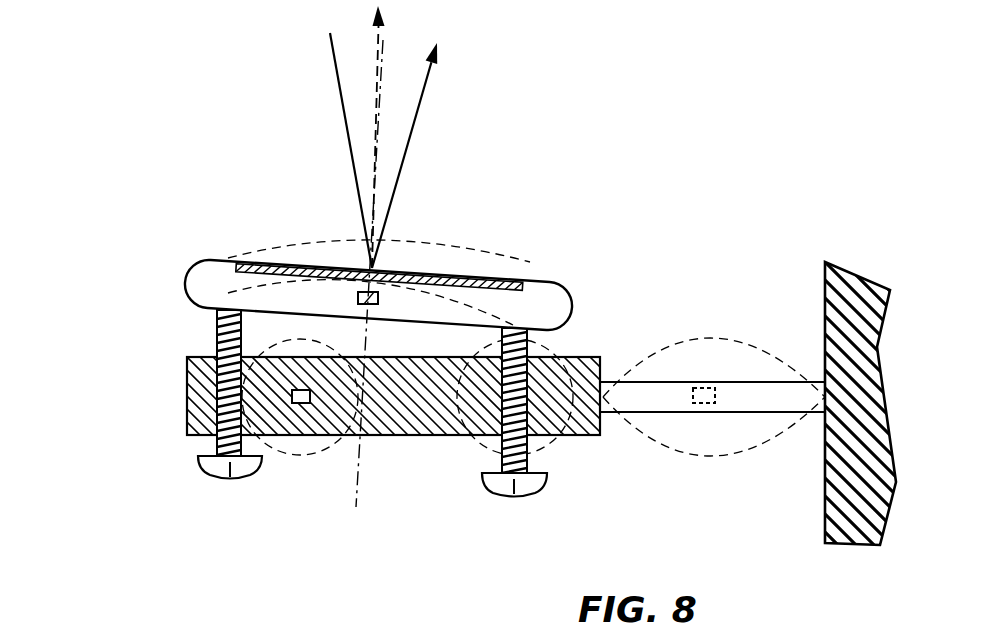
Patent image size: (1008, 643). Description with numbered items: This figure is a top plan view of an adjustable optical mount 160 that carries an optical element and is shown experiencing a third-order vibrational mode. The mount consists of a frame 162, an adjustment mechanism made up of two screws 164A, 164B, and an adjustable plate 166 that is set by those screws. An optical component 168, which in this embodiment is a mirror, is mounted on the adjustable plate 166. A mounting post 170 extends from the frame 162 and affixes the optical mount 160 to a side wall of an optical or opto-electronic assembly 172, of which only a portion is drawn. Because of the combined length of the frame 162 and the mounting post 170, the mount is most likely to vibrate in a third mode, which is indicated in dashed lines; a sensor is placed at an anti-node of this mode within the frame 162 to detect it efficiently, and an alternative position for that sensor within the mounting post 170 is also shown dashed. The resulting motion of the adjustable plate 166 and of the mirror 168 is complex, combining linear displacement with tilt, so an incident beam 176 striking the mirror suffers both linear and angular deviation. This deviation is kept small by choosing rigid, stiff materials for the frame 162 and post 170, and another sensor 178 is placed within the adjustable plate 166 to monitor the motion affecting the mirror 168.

The adjustable optical mount 160 is at (114, 58).
The frame 162 is at (187, 378).
The screw 164A is at (200, 476).
The screw 164B is at (544, 496).
The adjustable plate 166 is at (192, 262).
The optical component 168 is at (289, 262).
The mounting post 170 is at (650, 382).
The optical or opto-electronic assembly 172 is at (861, 278).
The incident beam 176 is at (344, 109).
The sensor 178 is at (378, 297).